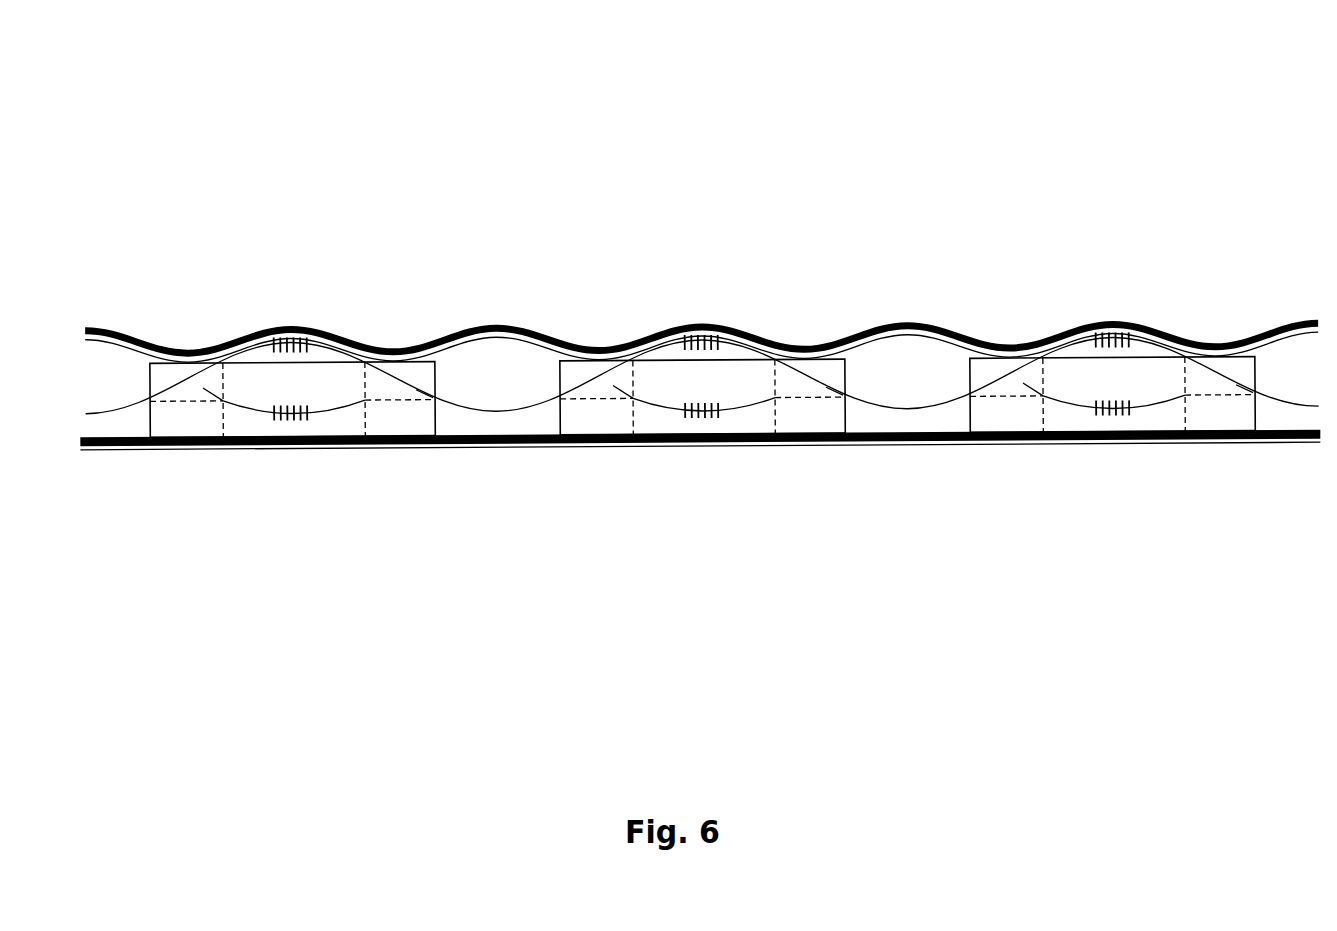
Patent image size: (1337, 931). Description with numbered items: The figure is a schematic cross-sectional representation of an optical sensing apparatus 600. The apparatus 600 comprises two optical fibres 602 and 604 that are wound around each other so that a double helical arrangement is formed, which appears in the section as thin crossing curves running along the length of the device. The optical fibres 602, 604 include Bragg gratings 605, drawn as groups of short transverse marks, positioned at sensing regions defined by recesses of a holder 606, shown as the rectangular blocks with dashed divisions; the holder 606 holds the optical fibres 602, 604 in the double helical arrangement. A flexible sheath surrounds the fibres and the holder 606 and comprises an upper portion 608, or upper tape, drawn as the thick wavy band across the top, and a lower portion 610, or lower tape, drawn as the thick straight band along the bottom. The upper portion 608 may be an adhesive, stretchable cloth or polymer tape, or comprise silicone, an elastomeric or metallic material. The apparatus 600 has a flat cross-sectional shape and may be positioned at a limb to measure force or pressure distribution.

The optical sensing apparatus 600 is at (772, 182).
The optical fibre 602 is at (500, 327).
The optical fibre 604 is at (497, 408).
The Bragg gratings 605 is at (700, 417).
The holder 606 is at (590, 415).
The upper portion 608 is at (975, 325).
The lower portion 610 is at (940, 447).